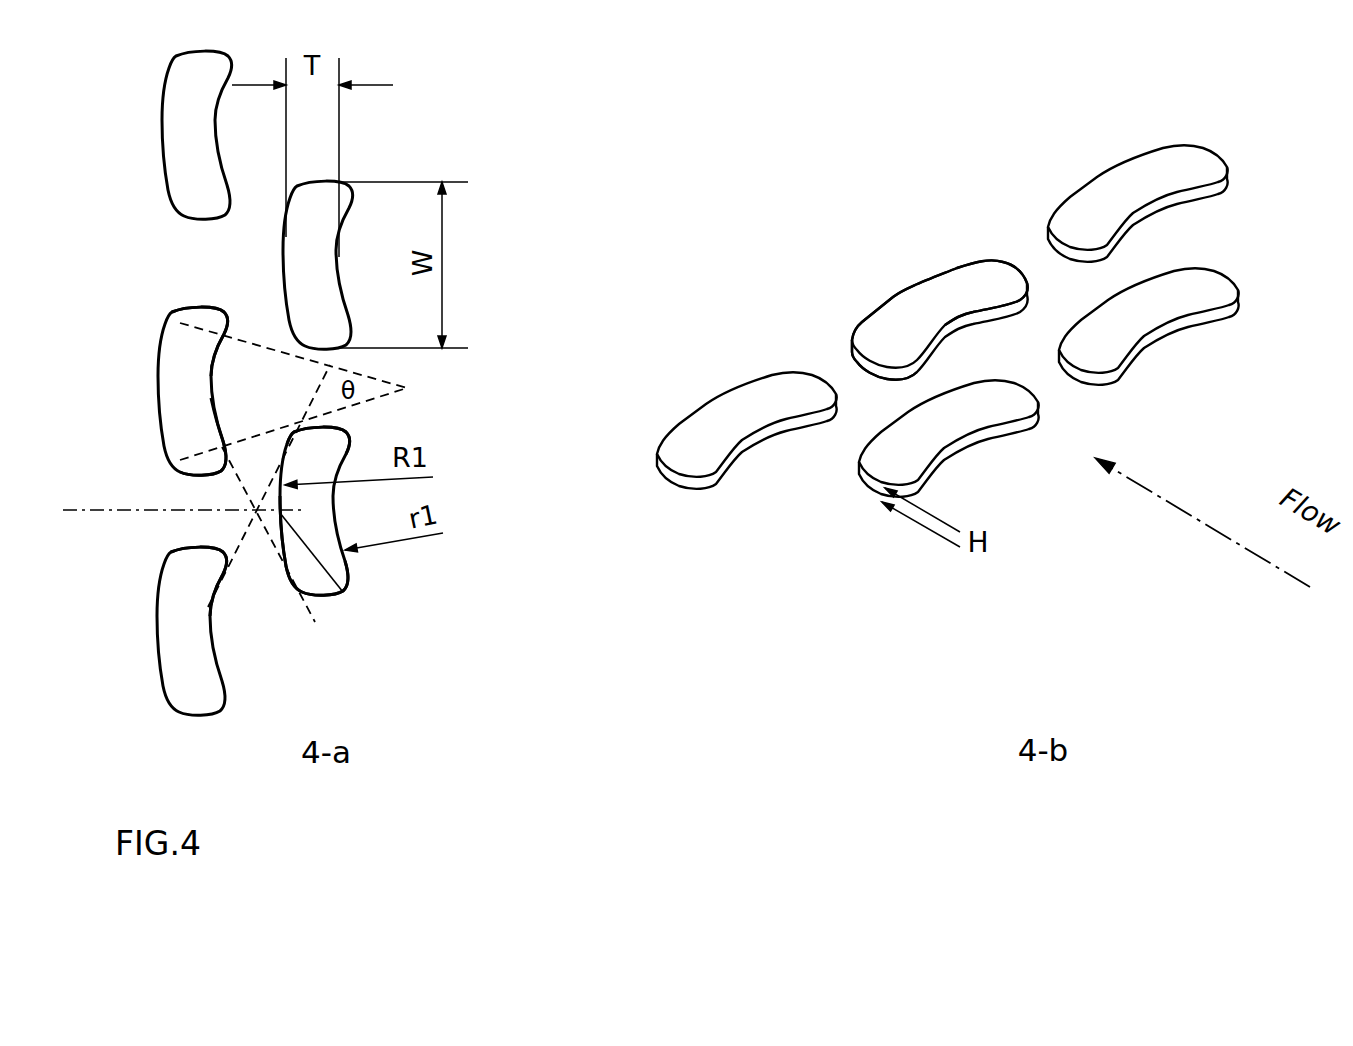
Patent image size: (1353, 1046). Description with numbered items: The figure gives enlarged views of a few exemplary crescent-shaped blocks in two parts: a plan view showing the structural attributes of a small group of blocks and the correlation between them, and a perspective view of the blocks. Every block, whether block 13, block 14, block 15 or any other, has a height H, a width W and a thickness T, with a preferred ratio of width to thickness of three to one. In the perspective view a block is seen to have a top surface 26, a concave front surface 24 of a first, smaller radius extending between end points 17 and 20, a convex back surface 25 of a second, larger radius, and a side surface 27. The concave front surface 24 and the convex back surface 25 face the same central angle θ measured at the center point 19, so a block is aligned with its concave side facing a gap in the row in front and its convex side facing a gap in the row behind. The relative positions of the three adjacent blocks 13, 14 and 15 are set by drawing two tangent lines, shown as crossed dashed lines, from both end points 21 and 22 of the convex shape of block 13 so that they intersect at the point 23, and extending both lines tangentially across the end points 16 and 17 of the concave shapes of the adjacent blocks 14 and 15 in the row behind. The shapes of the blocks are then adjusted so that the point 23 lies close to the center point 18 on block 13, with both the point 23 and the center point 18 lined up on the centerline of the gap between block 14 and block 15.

The block 13 is at (338, 567).
The block 14 is at (172, 647).
The block 15 is at (172, 378).
The end point 16 is at (227, 571).
The end point 17 is at (225, 446).
The center point 18 is at (343, 590).
The center point 19 is at (408, 389).
The end point 20 is at (226, 348).
The end point 21 is at (297, 442).
The end point 22 is at (300, 583).
The intersection point 23 is at (243, 498).
The concave front surface 24 is at (958, 327).
The convex back surface 25 is at (887, 300).
The top surface 26 is at (970, 275).
The side surface 27 is at (870, 363).